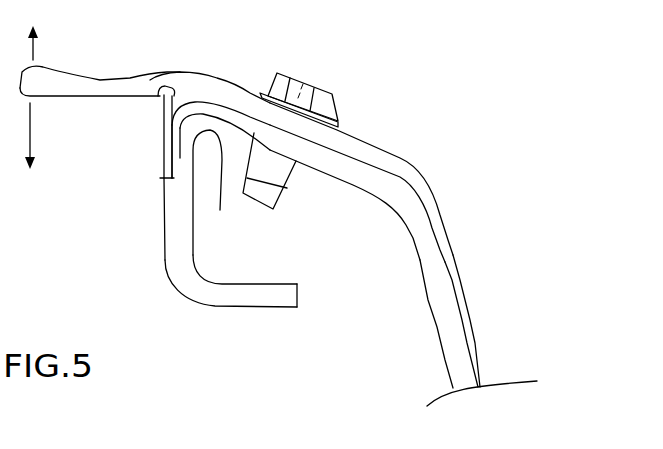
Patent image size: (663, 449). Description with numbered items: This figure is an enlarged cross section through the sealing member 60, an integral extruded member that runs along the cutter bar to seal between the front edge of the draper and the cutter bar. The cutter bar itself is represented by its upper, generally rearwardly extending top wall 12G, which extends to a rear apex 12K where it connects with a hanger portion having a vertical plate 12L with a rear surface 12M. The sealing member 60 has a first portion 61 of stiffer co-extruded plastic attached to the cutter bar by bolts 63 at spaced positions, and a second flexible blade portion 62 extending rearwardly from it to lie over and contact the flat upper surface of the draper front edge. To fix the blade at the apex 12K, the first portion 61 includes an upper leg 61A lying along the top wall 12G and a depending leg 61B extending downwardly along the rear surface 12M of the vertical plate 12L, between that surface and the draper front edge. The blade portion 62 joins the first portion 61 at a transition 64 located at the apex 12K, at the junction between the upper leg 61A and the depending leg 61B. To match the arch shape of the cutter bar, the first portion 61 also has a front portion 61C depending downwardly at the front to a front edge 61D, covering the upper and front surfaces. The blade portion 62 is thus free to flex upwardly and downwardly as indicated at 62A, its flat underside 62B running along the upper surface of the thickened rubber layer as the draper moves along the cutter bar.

The sealing member 60 is at (214, 72).
The first portion 61 is at (254, 84).
The upper leg 61A is at (198, 87).
The depending leg 61B is at (161, 179).
The front portion 61C is at (444, 241).
The front edge 61D is at (470, 340).
The second flexible blade portion 62 is at (107, 60).
The upward and downward flexing 62A is at (30, 170).
The flat underside 62B is at (78, 97).
The bolts 63 is at (312, 86).
The transition 64 is at (161, 90).
The rear apex 12K is at (209, 195).
The vertical plate 12L is at (220, 290).
The rear surface 12M is at (196, 302).
The top wall 12G is at (262, 209).